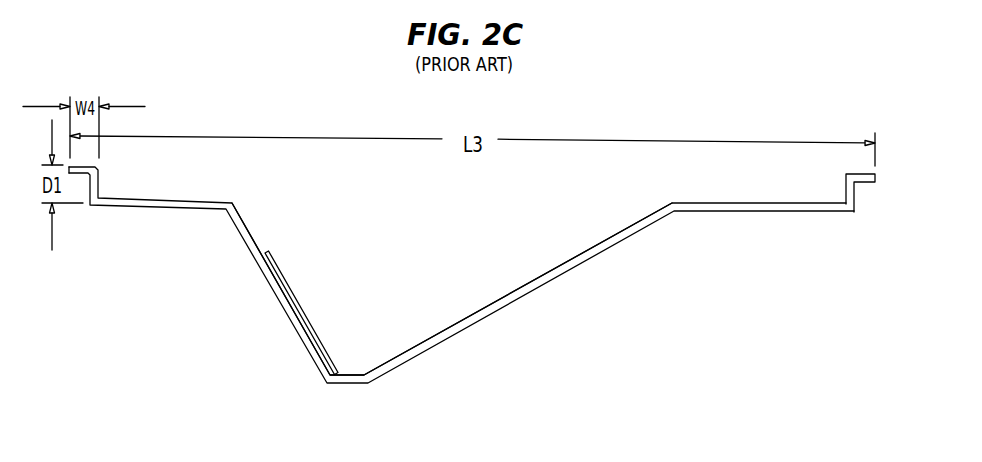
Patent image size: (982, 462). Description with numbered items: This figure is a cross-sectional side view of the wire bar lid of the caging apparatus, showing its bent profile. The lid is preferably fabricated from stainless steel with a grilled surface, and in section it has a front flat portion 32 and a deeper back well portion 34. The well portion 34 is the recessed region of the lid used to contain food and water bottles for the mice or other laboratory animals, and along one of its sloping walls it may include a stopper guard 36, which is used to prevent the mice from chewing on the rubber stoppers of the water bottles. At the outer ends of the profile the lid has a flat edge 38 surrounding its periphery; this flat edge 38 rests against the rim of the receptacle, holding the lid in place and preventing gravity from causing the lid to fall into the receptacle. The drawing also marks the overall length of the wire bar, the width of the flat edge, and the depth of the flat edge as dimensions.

The front flat portion 32 is at (725, 203).
The back well portion 34 is at (447, 267).
The stopper guard 36 is at (300, 313).
The flat edge 38 is at (860, 181).